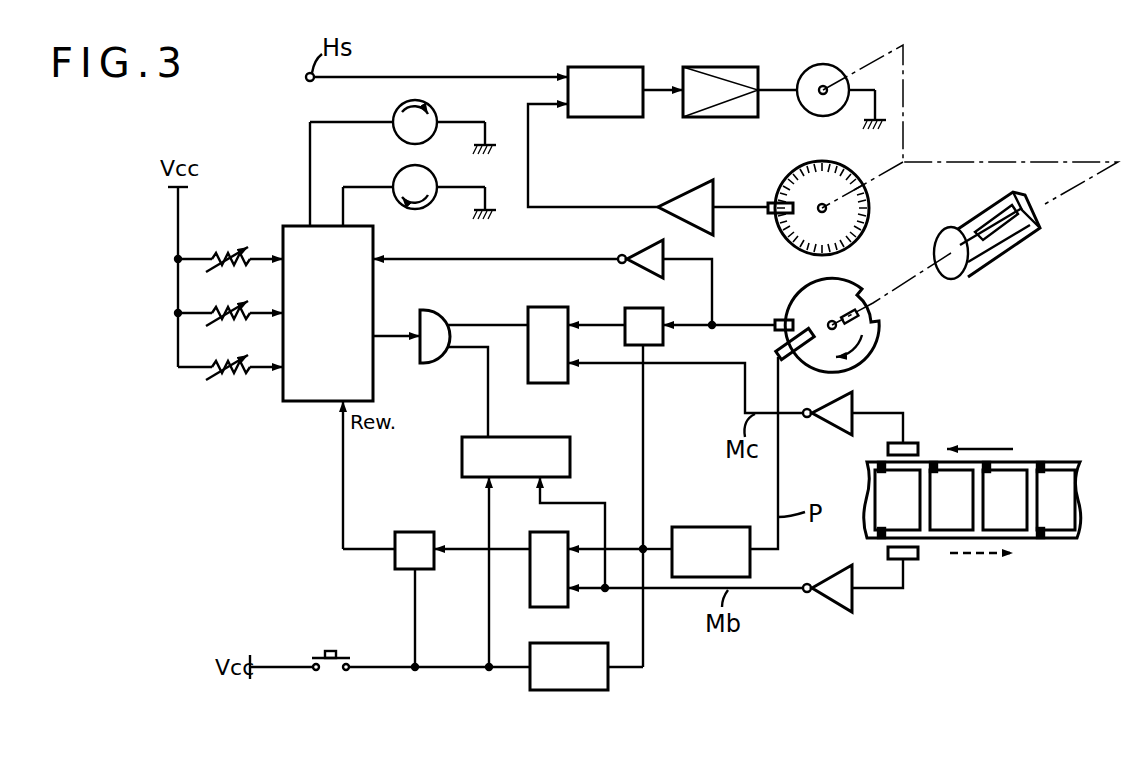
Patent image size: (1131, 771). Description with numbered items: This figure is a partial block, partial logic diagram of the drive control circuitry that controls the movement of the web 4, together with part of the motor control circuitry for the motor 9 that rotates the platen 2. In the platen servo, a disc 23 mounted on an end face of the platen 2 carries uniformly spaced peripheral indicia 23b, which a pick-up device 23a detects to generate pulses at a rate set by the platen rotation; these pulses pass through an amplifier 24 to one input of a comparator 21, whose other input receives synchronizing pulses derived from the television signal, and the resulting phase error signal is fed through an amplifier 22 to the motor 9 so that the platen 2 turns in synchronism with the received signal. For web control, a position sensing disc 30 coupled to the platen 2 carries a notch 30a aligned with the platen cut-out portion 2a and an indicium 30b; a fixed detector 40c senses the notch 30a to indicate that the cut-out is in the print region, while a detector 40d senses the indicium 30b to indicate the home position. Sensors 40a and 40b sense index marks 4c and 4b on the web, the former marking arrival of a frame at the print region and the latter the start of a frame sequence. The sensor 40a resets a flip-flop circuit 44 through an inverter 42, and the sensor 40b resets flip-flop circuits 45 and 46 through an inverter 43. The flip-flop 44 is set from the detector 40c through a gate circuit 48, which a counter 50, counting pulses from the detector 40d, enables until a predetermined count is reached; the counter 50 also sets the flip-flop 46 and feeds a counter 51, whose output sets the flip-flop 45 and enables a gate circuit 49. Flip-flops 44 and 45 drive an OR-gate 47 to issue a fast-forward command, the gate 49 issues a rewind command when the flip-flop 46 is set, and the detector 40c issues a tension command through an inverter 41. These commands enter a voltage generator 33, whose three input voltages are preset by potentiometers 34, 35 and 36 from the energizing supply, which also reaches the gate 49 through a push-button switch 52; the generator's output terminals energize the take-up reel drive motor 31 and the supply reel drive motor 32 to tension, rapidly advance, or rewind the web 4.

The platen 2 is at (987, 255).
The notch or cut-out portion of platen 2a is at (990, 235).
The web 4 is at (974, 507).
The index mark 4b is at (1041, 540).
The index mark 4c is at (1043, 463).
The motor 9 is at (833, 65).
The comparator 21 is at (608, 67).
The amplifier 22 is at (723, 67).
The disc 23 is at (849, 190).
The pick-up device 23a is at (770, 200).
The indicia 23b is at (808, 165).
The amplifier 24 is at (688, 192).
The position sensing disc 30 is at (871, 312).
The notch 30a is at (873, 316).
The indicium 30b is at (868, 332).
The take-up reel drive motor 31 is at (437, 110).
The supply reel drive motor 32 is at (393, 172).
The voltage generator 33 is at (296, 403).
The voltage-divider potentiometer 34 is at (226, 254).
The voltage-divider potentiometer 35 is at (226, 309).
The voltage-divider potentiometer 36 is at (226, 364).
The index mark sensor 40a is at (915, 442).
The index mark sensor 40b is at (915, 560).
The detector 40c is at (779, 318).
The detector 40d is at (802, 372).
The inverter 41 is at (636, 250).
The logic inverter circuit 42 is at (828, 437).
The inverter 43 is at (836, 612).
The flip-flop circuit 44 is at (545, 305).
The flip-flop circuit 45 is at (538, 437).
The flip-flop circuit 46 is at (570, 600).
The OR-gate 47 is at (431, 365).
The gate circuit 48 is at (665, 340).
The gate circuit 49 is at (393, 566).
The counter 50 is at (713, 525).
The counter 51 is at (610, 683).
The push-button switch 52 is at (331, 671).